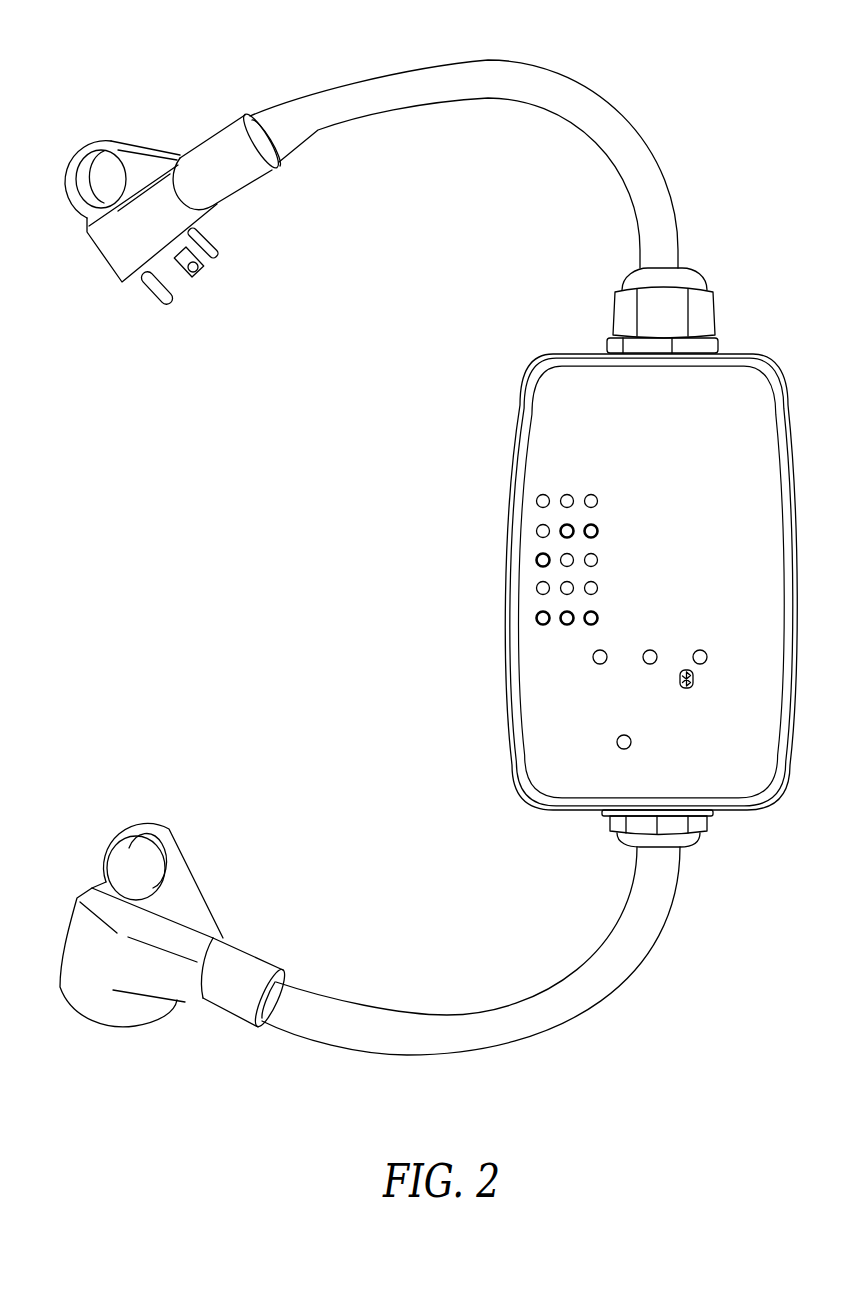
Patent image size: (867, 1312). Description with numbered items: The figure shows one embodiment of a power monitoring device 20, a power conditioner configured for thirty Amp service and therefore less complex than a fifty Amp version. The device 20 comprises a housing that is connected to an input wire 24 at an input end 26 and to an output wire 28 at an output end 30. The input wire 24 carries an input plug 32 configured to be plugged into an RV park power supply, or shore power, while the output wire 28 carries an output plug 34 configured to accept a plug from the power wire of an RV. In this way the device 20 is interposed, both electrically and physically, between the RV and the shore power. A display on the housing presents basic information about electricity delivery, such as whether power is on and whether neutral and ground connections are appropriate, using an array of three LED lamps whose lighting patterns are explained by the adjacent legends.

The power monitoring device 20 is at (440, 544).
The input wire 24 is at (498, 66).
The input end 26 is at (606, 334).
The output wire 28 is at (447, 1015).
The output end 30 is at (592, 831).
The input plug 32 is at (112, 284).
The output plug 34 is at (48, 930).